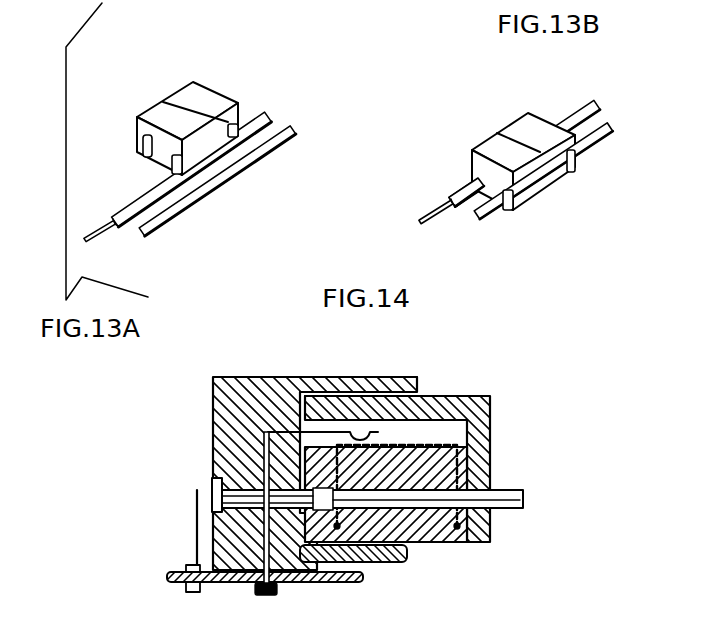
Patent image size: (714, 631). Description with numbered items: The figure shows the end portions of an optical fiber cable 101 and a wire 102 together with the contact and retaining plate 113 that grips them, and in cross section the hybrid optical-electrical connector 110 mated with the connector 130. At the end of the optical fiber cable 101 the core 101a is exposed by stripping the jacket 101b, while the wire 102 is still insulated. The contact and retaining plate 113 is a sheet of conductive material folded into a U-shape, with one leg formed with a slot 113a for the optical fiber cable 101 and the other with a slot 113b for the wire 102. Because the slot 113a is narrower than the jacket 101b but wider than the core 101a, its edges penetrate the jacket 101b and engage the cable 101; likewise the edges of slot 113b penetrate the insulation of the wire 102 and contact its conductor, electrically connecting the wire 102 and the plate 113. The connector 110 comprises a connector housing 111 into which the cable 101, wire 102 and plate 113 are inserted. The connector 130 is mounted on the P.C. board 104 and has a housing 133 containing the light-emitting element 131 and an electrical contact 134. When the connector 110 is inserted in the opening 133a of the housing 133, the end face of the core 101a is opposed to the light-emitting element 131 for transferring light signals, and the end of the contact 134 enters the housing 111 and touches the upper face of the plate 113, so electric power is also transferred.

In FIG. 13A, the optical fiber cable 101 is at (138, 189).
In FIG. 13B, the optical fiber cable 101 is at (462, 181).
In FIG. 14, the optical fiber cable 101 is at (517, 510).
In FIG. 13A, the core 101a is at (100, 245).
In FIG. 13B, the core 101a is at (425, 225).
In FIG. 13B, the jacket 101b is at (572, 122).
In FIG. 13A, the wire 102 is at (184, 213).
In FIG. 13B, the wire 102 is at (480, 218).
In FIG. 14, the P.C. board 104 is at (240, 580).
In FIG. 14, the hybrid optical-electrical connector 110 is at (505, 400).
In FIG. 14, the connector housing 111 is at (481, 474).
In FIG. 13A, the contact and retaining plate 113 is at (162, 98).
In FIG. 13B, the contact and retaining plate 113 is at (512, 130).
In FIG. 14, the contact and retaining plate 113 is at (448, 438).
In FIG. 13A, the slot 113a is at (143, 146).
In FIG. 13A, the slot 113b is at (237, 127).
In FIG. 13B, the slot 113b is at (539, 180).
In FIG. 14, the mating connector 130 is at (232, 368).
In FIG. 14, the light-emitting element 131 is at (212, 490).
In FIG. 14, the housing 133 is at (285, 377).
In FIG. 14, the opening 133a is at (418, 397).
In FIG. 14, the electrical contact 134 is at (303, 392).